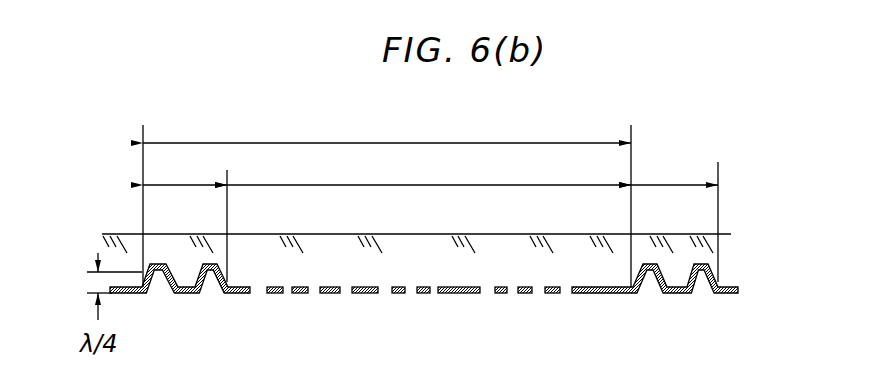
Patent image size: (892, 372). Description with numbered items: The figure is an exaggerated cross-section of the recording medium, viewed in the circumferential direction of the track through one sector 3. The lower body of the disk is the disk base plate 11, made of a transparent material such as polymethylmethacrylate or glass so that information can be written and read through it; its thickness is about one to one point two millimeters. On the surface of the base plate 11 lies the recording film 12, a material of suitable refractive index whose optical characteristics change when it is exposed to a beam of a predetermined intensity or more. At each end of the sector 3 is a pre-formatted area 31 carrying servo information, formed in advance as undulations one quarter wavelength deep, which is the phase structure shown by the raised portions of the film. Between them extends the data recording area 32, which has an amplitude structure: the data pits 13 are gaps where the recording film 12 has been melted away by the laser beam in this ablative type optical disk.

The sector 3 is at (387, 204).
The pre-formatted area 31 is at (430, 221).
The data recording area 32 is at (429, 175).
The disk base plate 11 is at (727, 260).
The recording film 12 is at (742, 291).
The data pits 13 is at (322, 347).